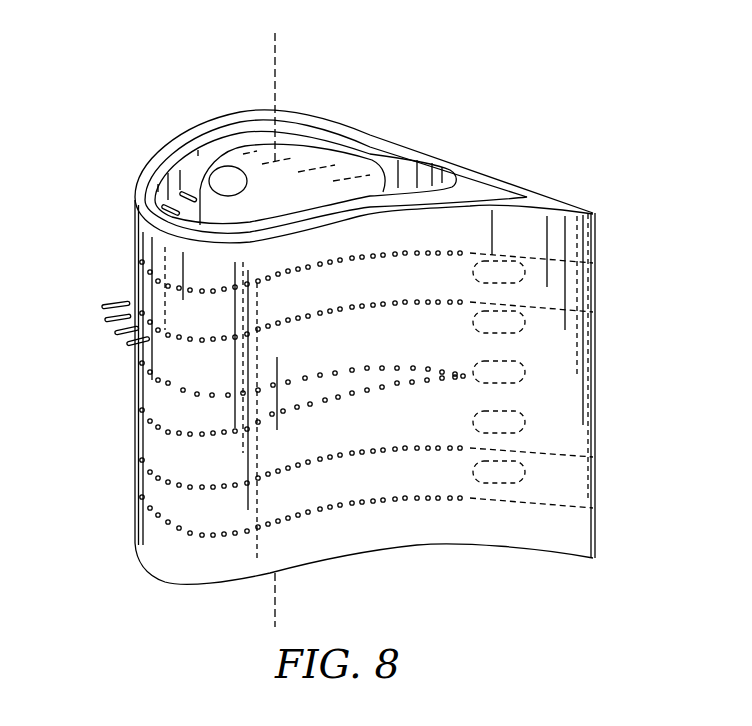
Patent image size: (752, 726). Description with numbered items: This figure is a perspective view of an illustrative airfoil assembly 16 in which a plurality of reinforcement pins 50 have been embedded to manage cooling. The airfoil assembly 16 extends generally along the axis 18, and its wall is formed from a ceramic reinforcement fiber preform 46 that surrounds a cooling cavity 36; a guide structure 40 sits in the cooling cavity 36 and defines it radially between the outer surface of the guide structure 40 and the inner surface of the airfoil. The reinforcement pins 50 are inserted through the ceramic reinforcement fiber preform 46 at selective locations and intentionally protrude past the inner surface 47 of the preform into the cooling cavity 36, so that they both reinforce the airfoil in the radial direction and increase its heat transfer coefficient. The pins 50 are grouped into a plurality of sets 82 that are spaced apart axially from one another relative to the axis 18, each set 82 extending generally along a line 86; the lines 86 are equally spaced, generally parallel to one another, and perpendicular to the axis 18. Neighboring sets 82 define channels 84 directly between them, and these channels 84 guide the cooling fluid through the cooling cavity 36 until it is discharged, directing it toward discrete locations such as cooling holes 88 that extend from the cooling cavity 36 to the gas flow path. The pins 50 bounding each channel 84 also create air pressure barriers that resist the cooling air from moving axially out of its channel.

The airfoil assembly 16 is at (617, 96).
The axis 18 is at (282, 64).
The cooling cavity 36 is at (393, 150).
The guide structure 40 is at (320, 160).
The ceramic reinforcement fiber preform 46 is at (455, 135).
The inner surface 47 is at (182, 170).
The reinforcement pins 50 is at (100, 292).
The sets 82 is at (120, 352).
The channels 84 is at (162, 462).
The lines 86 is at (568, 304).
The cooling holes 88 is at (622, 512).